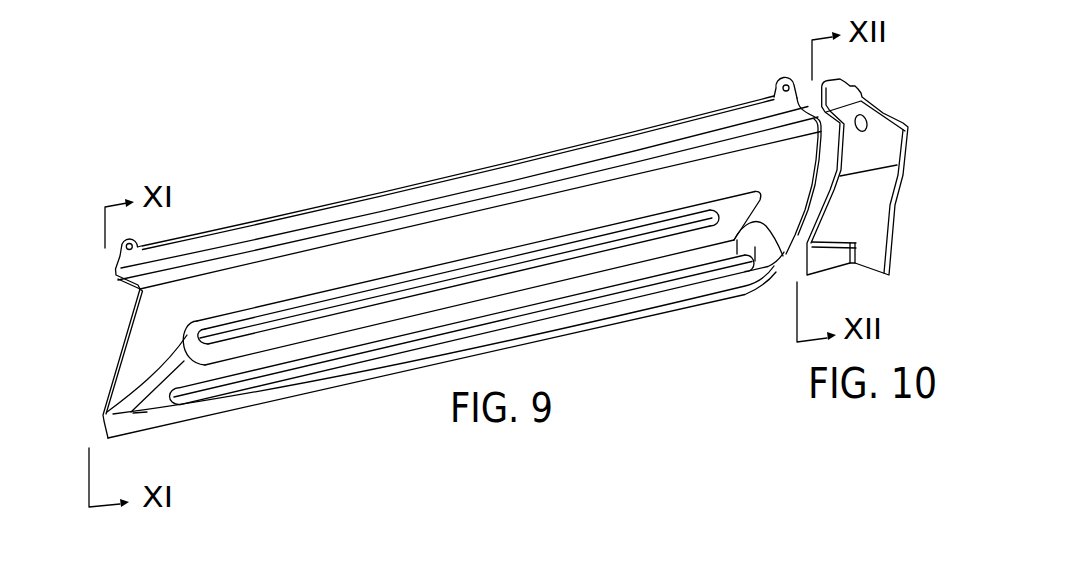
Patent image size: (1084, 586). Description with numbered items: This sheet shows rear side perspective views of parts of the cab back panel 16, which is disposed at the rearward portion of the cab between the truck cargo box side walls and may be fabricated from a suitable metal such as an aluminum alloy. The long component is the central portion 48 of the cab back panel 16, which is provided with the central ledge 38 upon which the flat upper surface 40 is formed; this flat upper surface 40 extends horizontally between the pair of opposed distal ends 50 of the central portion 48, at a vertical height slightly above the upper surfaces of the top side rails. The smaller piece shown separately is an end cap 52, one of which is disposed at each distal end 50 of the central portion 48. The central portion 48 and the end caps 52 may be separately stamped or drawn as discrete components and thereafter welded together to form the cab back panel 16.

In FIG. 9, the cab back panel 16 is at (870, 10).
In FIG. 9, the central ledge 38 is at (157, 303).
In FIG. 9, the flat upper surface 40 is at (232, 253).
In FIG. 9, the central portion 48 is at (325, 385).
In FIG. 9, the distal ends 50 is at (113, 377).
In FIG. 10, the end cap 52 is at (860, 202).